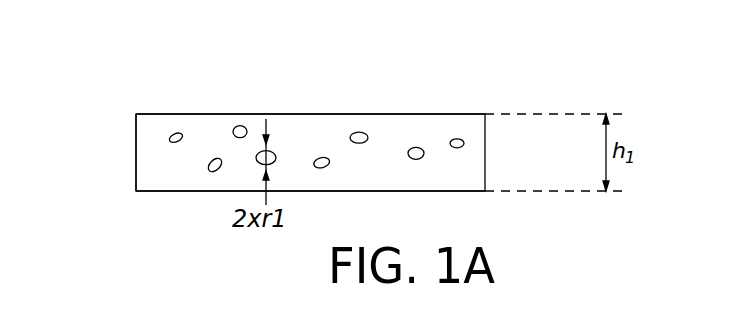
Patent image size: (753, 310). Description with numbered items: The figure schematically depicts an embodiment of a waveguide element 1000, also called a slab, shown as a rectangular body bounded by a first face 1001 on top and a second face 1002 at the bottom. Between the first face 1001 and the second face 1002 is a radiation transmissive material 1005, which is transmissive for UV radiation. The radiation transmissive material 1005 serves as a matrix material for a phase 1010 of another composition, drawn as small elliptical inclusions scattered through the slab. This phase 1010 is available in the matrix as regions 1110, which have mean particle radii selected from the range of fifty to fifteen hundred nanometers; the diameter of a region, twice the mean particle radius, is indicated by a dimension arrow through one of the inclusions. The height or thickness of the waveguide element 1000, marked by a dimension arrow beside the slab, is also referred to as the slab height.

The waveguide element 1000 is at (597, 66).
The first face 1001 is at (432, 114).
The second face 1002 is at (473, 191).
The radiation transmissive material 1005 is at (148, 162).
The phase 1010 is at (216, 158).
The regions 1110 is at (212, 172).